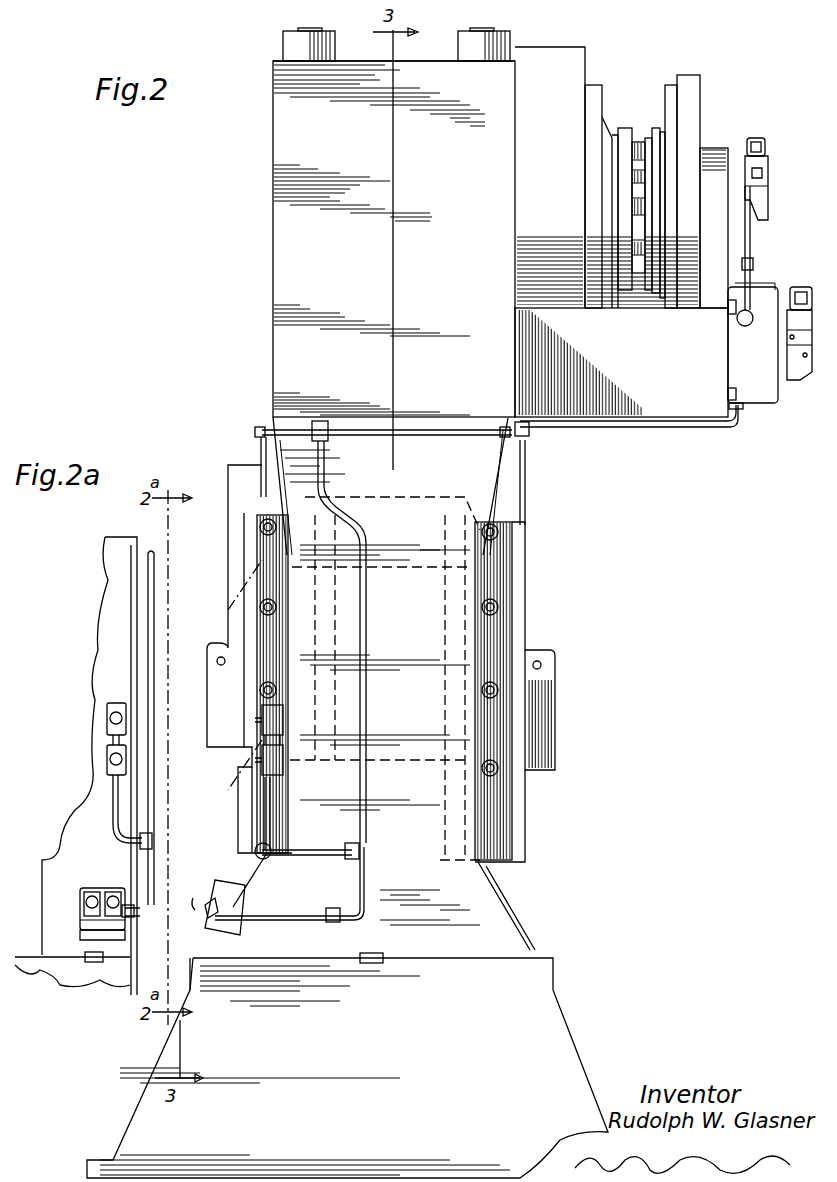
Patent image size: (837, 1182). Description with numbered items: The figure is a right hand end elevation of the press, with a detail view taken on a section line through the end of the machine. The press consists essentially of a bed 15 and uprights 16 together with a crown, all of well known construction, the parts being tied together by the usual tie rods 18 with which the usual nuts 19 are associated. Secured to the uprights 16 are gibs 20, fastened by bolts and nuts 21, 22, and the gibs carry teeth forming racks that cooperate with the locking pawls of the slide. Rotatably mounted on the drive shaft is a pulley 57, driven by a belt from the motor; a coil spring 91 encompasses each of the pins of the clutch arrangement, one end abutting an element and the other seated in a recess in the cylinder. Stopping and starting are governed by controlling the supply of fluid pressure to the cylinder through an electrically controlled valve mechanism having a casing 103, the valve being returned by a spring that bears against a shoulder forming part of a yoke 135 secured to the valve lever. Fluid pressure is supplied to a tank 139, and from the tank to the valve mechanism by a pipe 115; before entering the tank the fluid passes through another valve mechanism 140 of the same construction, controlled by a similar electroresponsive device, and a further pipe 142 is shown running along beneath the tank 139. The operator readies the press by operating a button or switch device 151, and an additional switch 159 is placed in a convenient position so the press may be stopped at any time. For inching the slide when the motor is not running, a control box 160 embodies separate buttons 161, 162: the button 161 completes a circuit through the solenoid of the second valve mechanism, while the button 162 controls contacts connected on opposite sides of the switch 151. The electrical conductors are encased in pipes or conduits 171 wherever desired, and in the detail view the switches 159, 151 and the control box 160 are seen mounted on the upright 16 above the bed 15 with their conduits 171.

In FIG. 2, the bed 15 is at (545, 958).
In FIG. 2A, the bed 15 is at (25, 962).
In FIG. 2, the uprights 16 is at (488, 480).
In FIG. 2A, the uprights 16 is at (100, 626).
In FIG. 2, the tie rods 18 is at (300, 30).
In FIG. 2, the nuts 19 is at (283, 51).
In FIG. 2, the gibs 20 is at (258, 566).
In FIG. 2, the bolts and nuts 21 is at (505, 535).
In FIG. 2, the bolt head 22 is at (498, 528).
In FIG. 2, the pulley 57 is at (575, 56).
In FIG. 2, the coil spring 91 is at (636, 143).
In FIG. 2, the casing 103 is at (768, 168).
In FIG. 2, the pipe 115 is at (752, 244).
In FIG. 2, the yoke 135 is at (760, 138).
In FIG. 2, the tank 139 is at (735, 378).
In FIG. 2, the valve mechanism 140 is at (785, 325).
In FIG. 2, the pipe 142 is at (683, 424).
In FIG. 2, the button or switch device 151 is at (262, 765).
In FIG. 2A, the button or switch device 151 is at (107, 762).
In FIG. 2, the switch 159 is at (262, 724).
In FIG. 2A, the switch 159 is at (107, 725).
In FIG. 2, the control box 160 is at (222, 880).
In FIG. 2A, the control box 160 is at (95, 888).
In FIG. 2A, the button 161 is at (84, 902).
In FIG. 2, the button 162 is at (205, 905).
In FIG. 2A, the button 162 is at (113, 896).
In FIG. 2, the pipes or conduits 171 is at (428, 432).
In FIG. 2A, the pipes or conduits 171 is at (156, 622).